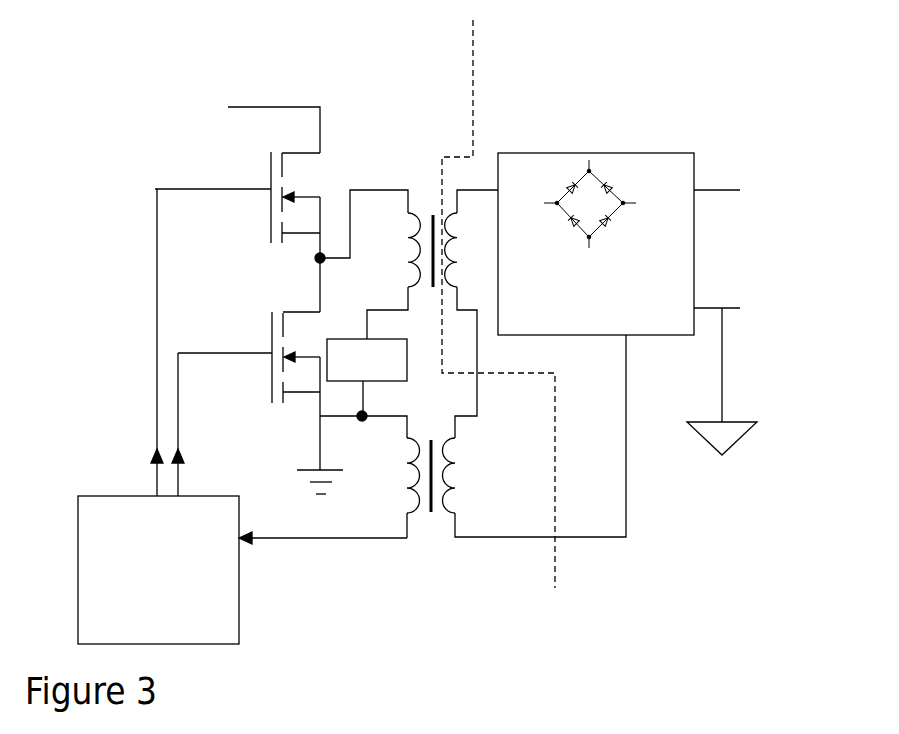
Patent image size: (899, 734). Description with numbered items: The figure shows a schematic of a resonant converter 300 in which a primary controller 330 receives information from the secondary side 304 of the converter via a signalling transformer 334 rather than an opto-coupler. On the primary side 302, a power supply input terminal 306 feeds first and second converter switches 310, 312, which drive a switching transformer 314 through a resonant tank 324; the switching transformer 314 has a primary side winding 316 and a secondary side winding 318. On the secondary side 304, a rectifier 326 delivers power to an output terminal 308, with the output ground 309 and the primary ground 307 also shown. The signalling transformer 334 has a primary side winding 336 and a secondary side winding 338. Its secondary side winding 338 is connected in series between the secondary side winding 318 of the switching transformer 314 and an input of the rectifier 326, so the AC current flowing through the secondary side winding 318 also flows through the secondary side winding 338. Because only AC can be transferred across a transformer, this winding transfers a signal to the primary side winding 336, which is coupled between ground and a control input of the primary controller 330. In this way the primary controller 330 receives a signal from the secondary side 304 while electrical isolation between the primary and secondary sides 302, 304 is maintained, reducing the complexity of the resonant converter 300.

The resonant converter 300 is at (650, 104).
The primary side 302 is at (549, 483).
The secondary side 304 is at (597, 483).
The power supply input terminal 306 is at (237, 124).
The primary ground 307 is at (297, 470).
The output terminal 308 is at (757, 190).
The output ground GNDout 309 is at (772, 374).
The first converter switch 310 is at (270, 163).
The second converter switch 312 is at (271, 325).
The switching transformer 314 is at (442, 236).
The primary side winding 316 is at (418, 223).
The secondary side winding 318 is at (452, 240).
The resonant tank 324 is at (398, 382).
The rectifier 326 is at (694, 153).
The primary controller 330 is at (78, 496).
The signalling transformer 334 is at (485, 472).
The primary side winding 336 is at (408, 488).
The secondary side winding 338 is at (455, 488).